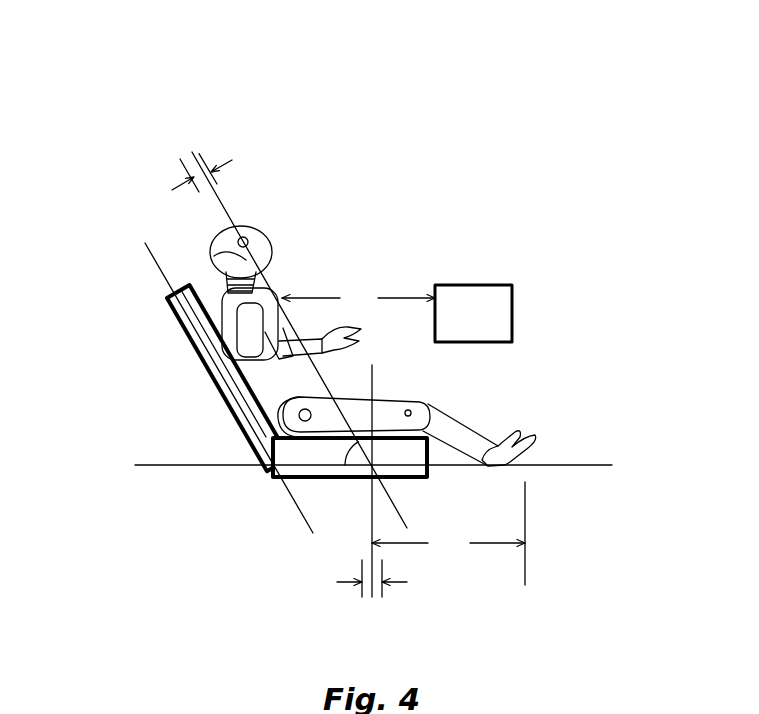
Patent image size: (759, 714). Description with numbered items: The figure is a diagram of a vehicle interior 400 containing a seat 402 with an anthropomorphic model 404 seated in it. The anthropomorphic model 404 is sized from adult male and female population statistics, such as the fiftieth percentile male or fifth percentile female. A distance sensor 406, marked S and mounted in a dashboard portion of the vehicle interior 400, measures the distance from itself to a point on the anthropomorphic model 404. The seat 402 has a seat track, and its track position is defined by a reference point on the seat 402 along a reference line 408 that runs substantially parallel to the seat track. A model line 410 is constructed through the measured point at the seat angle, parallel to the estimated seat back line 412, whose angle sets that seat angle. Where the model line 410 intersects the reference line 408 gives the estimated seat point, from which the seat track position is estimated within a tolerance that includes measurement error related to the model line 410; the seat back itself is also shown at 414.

The vehicle interior 400 is at (386, 24).
The seat 402 is at (263, 415).
The anthropomorphic model 404 is at (270, 237).
The distance sensor 406 is at (513, 293).
The reference line 408 is at (592, 465).
The model line 410 is at (215, 198).
The estimated seat back line 412 is at (158, 268).
The seatback 414 is at (203, 365).